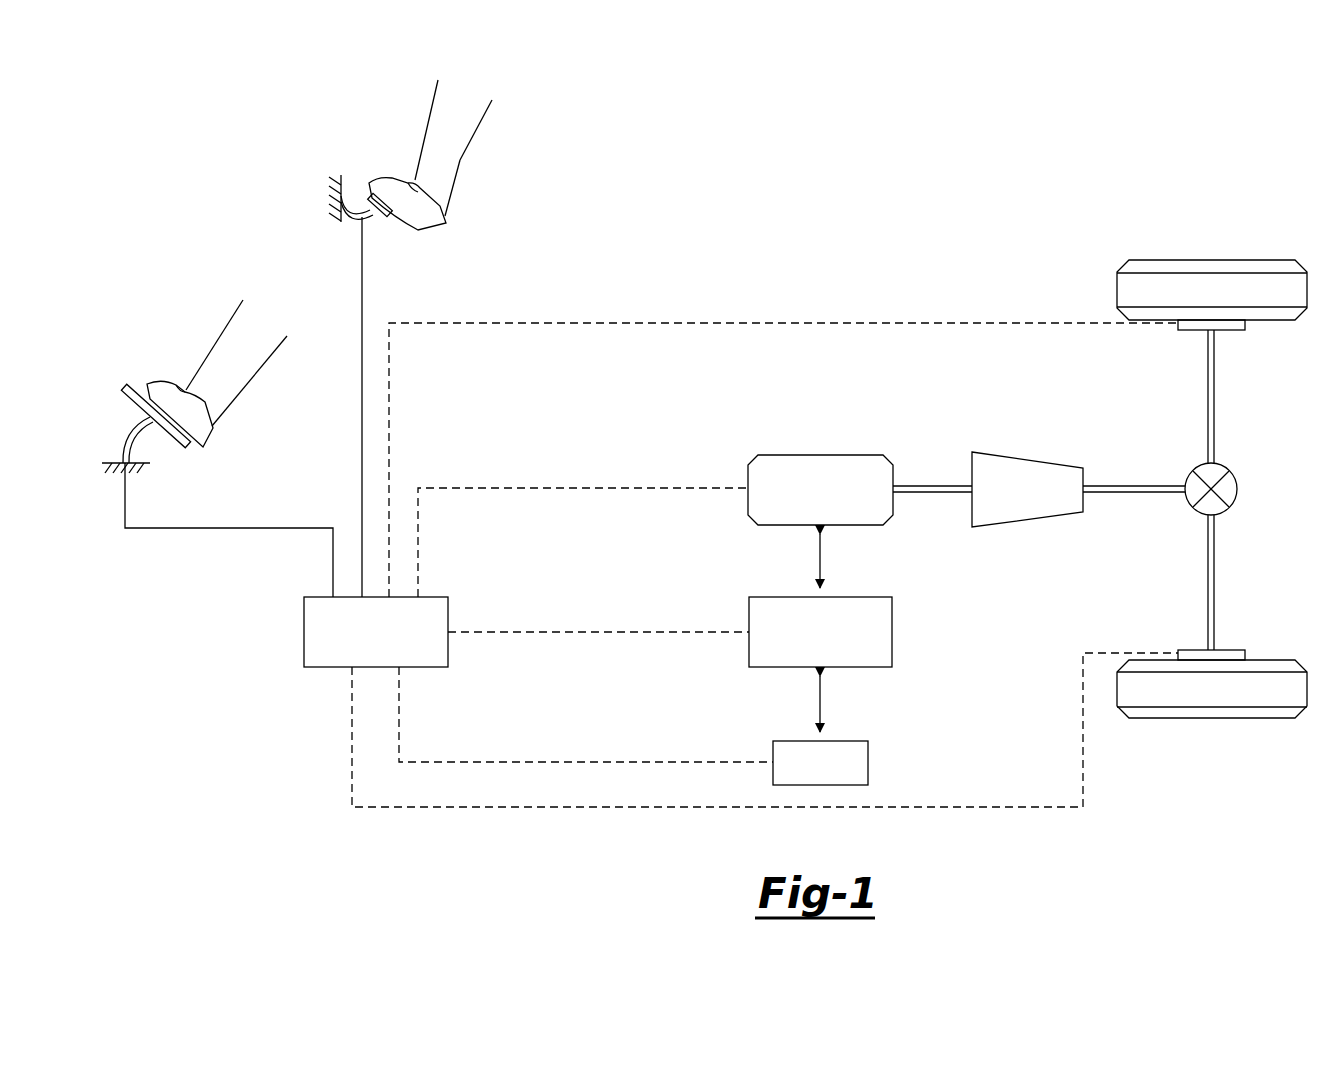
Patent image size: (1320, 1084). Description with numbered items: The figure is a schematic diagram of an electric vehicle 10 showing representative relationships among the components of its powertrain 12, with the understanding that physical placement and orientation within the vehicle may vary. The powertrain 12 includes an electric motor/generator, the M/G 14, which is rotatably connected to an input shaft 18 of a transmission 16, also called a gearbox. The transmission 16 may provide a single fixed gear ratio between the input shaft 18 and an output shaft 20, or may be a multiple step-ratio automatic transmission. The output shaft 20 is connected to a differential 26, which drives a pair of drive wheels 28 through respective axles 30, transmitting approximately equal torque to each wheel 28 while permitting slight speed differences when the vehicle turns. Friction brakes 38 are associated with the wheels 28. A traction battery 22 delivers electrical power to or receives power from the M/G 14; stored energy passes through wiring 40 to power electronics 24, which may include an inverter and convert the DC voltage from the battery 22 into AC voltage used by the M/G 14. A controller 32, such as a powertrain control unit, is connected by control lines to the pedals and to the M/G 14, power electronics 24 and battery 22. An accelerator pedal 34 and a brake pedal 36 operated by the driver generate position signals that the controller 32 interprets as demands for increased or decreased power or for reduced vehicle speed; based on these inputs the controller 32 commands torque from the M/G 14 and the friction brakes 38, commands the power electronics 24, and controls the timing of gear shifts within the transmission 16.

The electric vehicle 10 is at (1097, 190).
The powertrain 12 is at (714, 412).
The electric motor/generator (M/G) 14 is at (797, 455).
The transmission (gearbox) 16 is at (1025, 527).
The input shaft 18 is at (934, 486).
The output shaft 20 is at (1150, 486).
The traction battery 22 is at (868, 763).
The power electronics 24 is at (892, 632).
The differential 26 is at (1237, 488).
The drive wheels 28 is at (1213, 260).
The axles 30 is at (1215, 392).
The controller 32 is at (304, 631).
The accelerator pedal 34 is at (178, 343).
The brake pedal 36 is at (388, 133).
The friction brakes 38 is at (1245, 325).
The wiring 40 is at (822, 703).